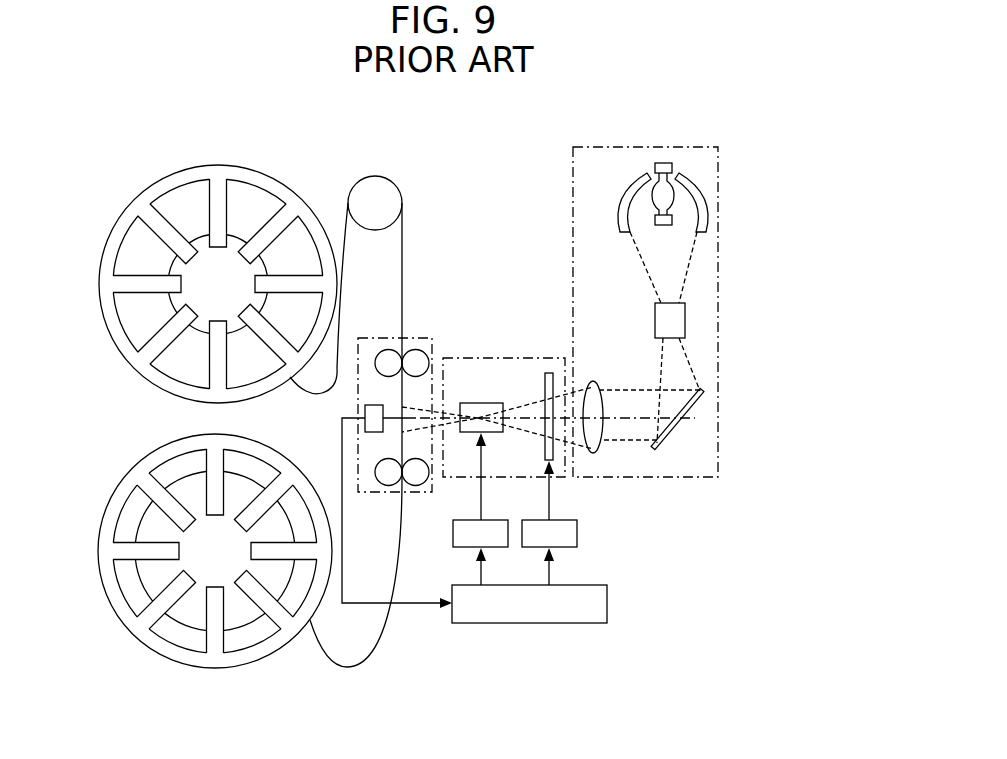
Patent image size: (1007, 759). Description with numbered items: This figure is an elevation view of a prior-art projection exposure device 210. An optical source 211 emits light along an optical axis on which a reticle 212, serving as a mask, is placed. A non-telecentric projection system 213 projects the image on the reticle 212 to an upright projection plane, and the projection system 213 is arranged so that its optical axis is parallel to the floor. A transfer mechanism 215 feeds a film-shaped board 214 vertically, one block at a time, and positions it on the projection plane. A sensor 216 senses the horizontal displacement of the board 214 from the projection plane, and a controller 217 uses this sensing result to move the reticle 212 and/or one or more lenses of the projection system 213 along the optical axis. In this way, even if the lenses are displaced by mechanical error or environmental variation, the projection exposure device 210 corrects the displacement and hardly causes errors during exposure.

The projection exposure device 210 is at (495, 210).
The optical source 211 is at (700, 202).
The reticle 212 is at (549, 372).
The non-telecentric projection system 213 is at (481, 402).
The film-shaped board 214 is at (375, 634).
The transfer mechanism 215 is at (326, 204).
The sensor 216 is at (366, 410).
The controller 217 is at (621, 598).